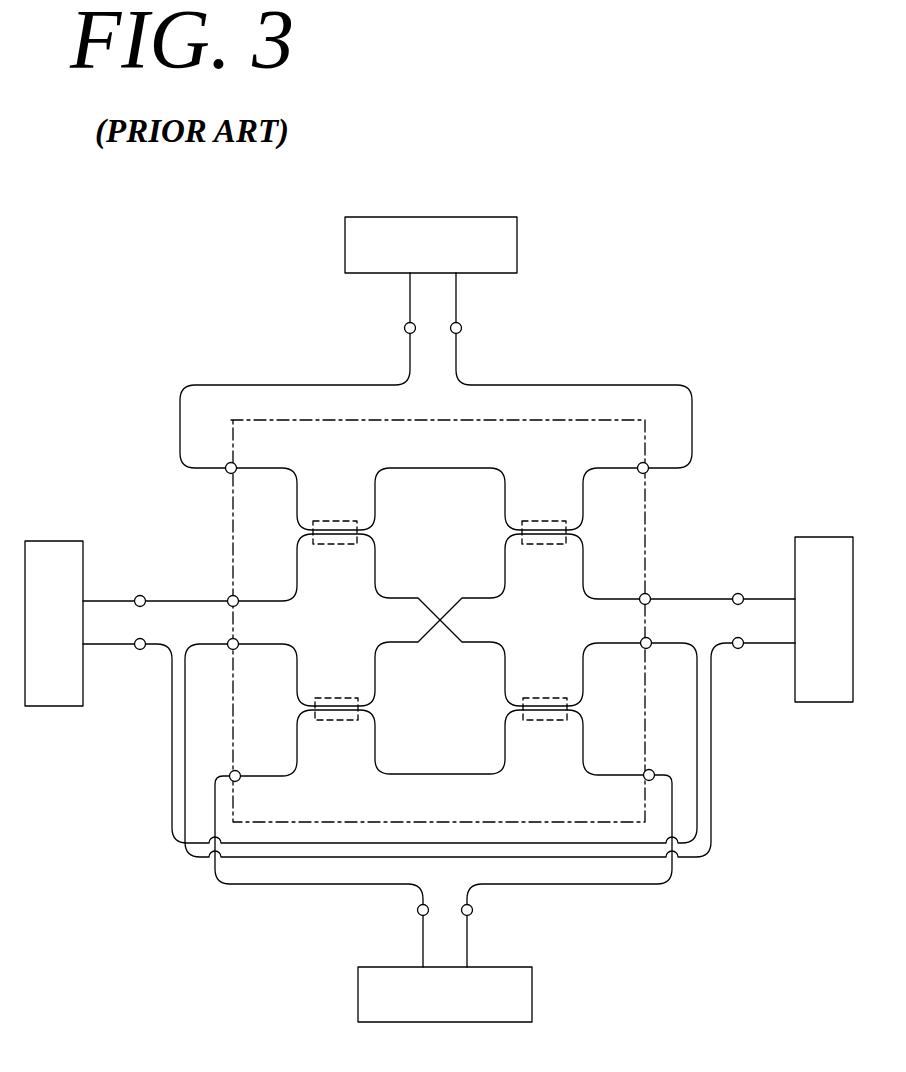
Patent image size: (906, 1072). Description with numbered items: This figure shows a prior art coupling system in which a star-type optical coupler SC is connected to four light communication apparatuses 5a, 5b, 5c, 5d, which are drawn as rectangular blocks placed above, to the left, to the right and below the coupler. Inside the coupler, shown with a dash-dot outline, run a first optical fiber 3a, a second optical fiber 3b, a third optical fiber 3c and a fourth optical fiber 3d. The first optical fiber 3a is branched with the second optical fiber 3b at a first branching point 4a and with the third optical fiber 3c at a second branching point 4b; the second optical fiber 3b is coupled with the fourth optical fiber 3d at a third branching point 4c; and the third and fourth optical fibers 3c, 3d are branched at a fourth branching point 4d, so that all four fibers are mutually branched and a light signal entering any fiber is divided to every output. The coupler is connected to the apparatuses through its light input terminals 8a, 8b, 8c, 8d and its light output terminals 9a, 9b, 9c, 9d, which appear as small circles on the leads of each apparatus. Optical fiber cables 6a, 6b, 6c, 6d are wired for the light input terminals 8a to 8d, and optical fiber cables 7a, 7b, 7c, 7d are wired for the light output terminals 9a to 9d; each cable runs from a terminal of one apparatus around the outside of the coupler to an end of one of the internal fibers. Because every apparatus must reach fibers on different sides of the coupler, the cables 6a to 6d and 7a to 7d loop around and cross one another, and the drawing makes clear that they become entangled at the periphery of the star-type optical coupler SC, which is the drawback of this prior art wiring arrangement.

The first optical fiber 3a is at (282, 467).
The second optical fiber 3b is at (289, 602).
The third optical fiber 3c is at (298, 658).
The fourth optical fiber 3d is at (280, 777).
The first branching point 4a is at (320, 520).
The second branching point 4b is at (528, 520).
The third branching point 4c is at (527, 722).
The fourth branching point 4d is at (355, 722).
The light communication apparatus 5a is at (431, 216).
The light communication apparatus 5b is at (50, 708).
The light communication apparatus 5c is at (815, 537).
The light communication apparatus 5d is at (533, 995).
The optical fiber cable 6a is at (260, 384).
The optical fiber cable 6b is at (190, 600).
The optical fiber cable 6c is at (695, 598).
The optical fiber cable 6d is at (295, 890).
The optical fiber cable 7a is at (612, 385).
The optical fiber cable 7b is at (172, 774).
The optical fiber cable 7c is at (713, 823).
The optical fiber cable 7d is at (600, 888).
The light input terminal 8a is at (404, 328).
The light input terminal 8b is at (140, 595).
The light input terminal 8c is at (738, 649).
The light input terminal 8d is at (417, 910).
The light output terminal 9a is at (462, 328).
The light output terminal 9b is at (140, 650).
The light output terminal 9c is at (738, 594).
The light output terminal 9d is at (473, 910).
The star-type optical coupler SC is at (648, 510).